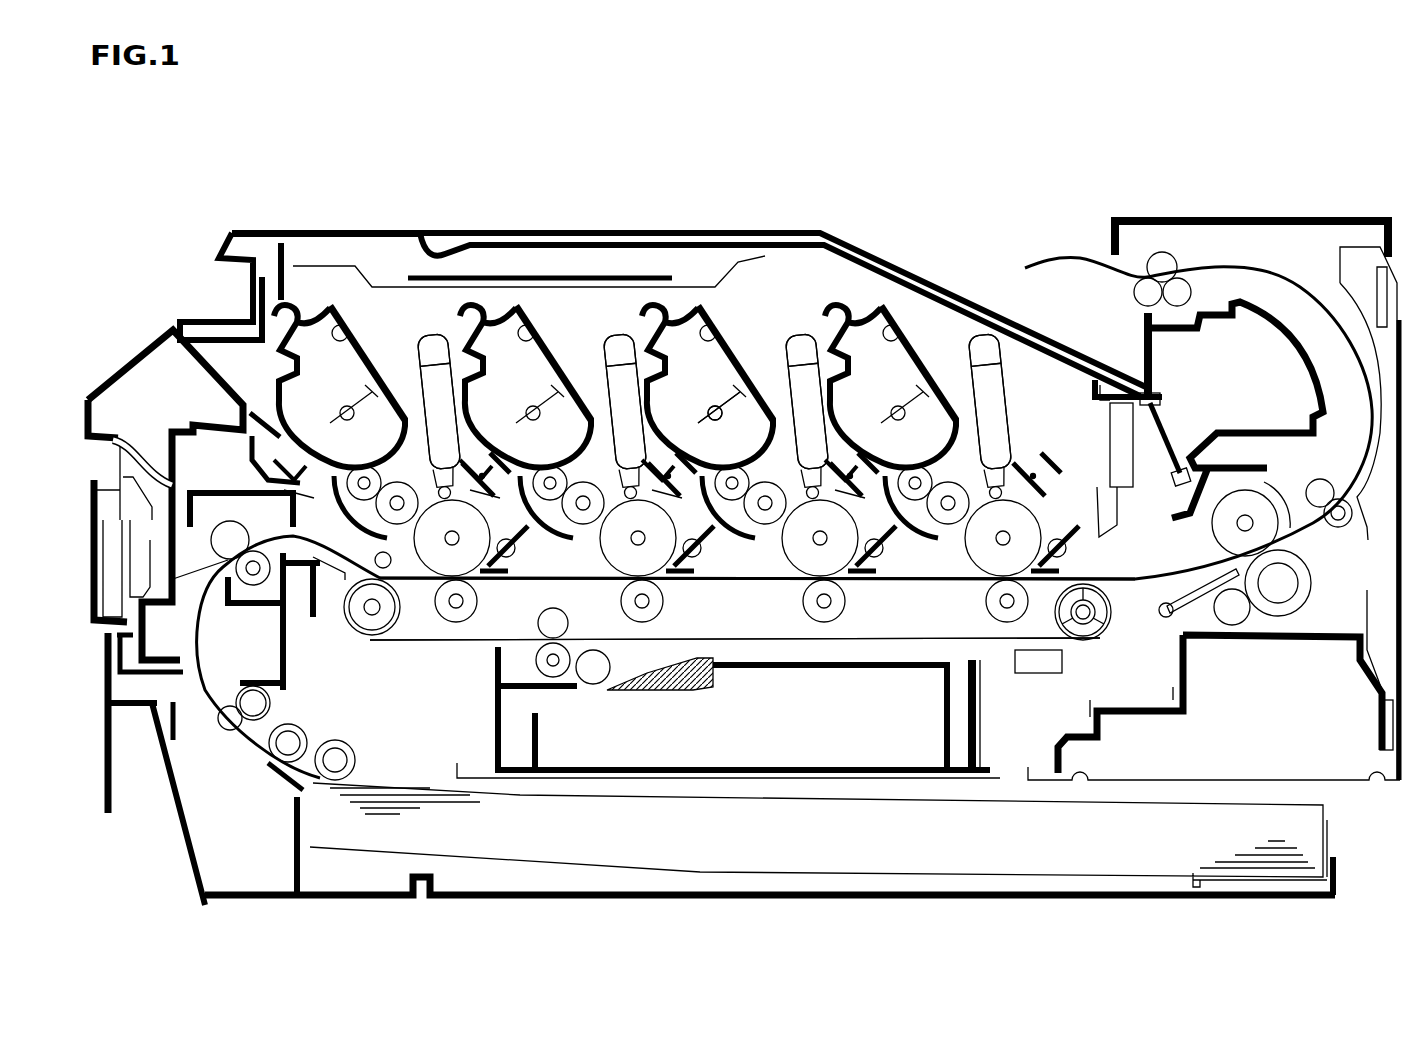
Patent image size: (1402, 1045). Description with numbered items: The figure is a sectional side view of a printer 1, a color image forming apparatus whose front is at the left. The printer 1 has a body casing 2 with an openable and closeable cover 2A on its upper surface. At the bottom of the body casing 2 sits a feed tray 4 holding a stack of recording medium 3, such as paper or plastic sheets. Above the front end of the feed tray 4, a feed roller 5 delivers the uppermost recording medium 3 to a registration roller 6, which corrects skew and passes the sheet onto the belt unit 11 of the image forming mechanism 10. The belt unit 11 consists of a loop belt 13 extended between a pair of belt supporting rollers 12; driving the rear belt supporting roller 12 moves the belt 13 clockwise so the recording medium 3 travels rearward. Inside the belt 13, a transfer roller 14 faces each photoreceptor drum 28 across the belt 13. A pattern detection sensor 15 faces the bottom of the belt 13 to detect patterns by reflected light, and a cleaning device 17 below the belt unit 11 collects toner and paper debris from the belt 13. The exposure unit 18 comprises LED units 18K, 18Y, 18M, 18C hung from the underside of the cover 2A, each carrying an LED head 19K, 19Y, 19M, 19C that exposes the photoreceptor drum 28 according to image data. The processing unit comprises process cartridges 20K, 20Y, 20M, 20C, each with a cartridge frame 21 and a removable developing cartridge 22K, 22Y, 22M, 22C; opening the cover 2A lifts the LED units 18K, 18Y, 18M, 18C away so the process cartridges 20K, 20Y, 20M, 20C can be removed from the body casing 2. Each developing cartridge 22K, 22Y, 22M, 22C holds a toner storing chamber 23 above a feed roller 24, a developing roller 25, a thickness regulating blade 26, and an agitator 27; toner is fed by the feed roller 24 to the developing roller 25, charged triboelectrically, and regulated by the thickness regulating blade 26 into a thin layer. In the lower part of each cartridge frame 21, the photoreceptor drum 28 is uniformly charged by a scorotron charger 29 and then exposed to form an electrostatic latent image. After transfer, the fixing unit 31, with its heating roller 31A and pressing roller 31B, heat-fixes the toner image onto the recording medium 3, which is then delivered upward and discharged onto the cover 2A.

The printer 1 is at (872, 152).
The body casing 2 is at (1167, 220).
The cover 2A is at (253, 233).
The recording medium 3 is at (1230, 820).
The feed tray 4 is at (1337, 868).
The feed roller 5 is at (354, 765).
The registration roller 6 is at (253, 582).
The image forming mechanism 10 is at (454, 673).
The belt unit 11 is at (366, 648).
The belt supporting rollers 12 is at (347, 623).
The belt 13 is at (400, 645).
The transfer roller 14 is at (823, 624).
The pattern detection sensor 15 is at (1033, 673).
The cleaning device 17 is at (810, 778).
The exposure unit 18 is at (716, 416).
The LED unit 18K is at (417, 330).
The LED unit 18Y is at (604, 330).
The LED unit 18M is at (792, 330).
The LED unit 18C is at (977, 330).
The LED head 19K is at (420, 500).
The LED head 19Y is at (600, 545).
The LED head 19M is at (783, 545).
The LED head 19C is at (985, 510).
The process cartridge 20K is at (308, 280).
The process cartridge 20Y is at (482, 292).
The process cartridge 20M is at (683, 305).
The process cartridge 20C is at (865, 308).
The cartridge frame 21 is at (656, 275).
The developing cartridge 22K is at (340, 302).
The developing cartridge 22Y is at (538, 305).
The developing cartridge 22M is at (740, 300).
The developing cartridge 22C is at (913, 323).
The toner storing chamber 23 is at (716, 333).
The feed roller 24 is at (693, 557).
The developing roller 25 is at (745, 500).
The thickness regulating blade 26 is at (768, 480).
The agitator 27 is at (718, 410).
The photoreceptor drum 28 is at (843, 606).
The charger 29 is at (918, 555).
The fixing unit 31 is at (1247, 459).
The heating roller 31A is at (1225, 542).
The pressing roller 31B is at (1313, 583).